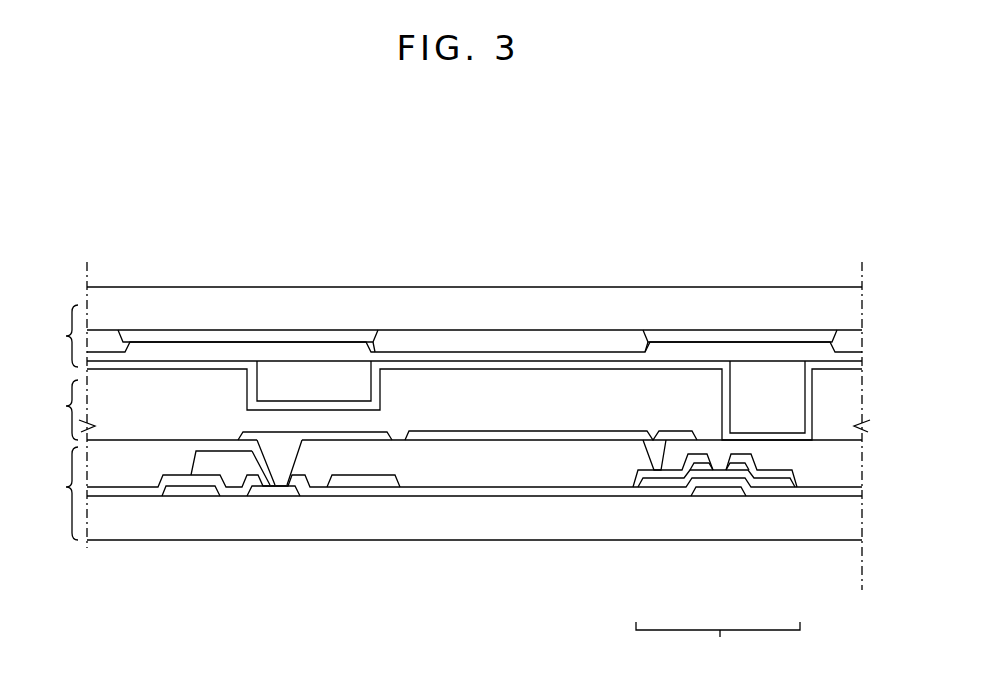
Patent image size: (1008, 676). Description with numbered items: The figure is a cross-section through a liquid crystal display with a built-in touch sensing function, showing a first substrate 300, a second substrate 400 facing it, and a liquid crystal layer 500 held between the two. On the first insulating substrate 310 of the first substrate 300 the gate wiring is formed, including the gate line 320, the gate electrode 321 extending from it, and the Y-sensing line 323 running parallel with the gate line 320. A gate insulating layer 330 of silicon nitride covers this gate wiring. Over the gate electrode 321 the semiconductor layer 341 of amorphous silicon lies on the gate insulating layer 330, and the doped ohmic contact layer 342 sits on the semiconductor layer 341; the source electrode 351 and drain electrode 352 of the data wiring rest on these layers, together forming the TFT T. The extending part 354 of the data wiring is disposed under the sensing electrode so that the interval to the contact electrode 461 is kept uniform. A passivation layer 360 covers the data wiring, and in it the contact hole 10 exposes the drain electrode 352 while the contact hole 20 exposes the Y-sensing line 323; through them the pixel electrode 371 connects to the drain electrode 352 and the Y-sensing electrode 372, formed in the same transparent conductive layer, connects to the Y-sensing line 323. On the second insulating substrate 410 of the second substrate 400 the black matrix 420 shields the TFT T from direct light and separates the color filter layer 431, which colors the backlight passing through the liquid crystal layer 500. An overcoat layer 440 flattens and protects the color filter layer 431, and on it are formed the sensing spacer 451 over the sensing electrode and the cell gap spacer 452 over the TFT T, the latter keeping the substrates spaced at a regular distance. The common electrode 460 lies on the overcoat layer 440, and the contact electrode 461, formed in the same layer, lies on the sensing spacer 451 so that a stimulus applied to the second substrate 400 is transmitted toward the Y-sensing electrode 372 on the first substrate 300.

The contact hole 10 is at (655, 424).
The contact hole 20 is at (276, 446).
The first substrate 300 is at (53, 493).
The first insulating substrate 310 is at (458, 525).
The gate line 320 is at (193, 490).
The gate electrode 321 is at (718, 493).
The Y-sensing line 323 is at (278, 493).
The gate insulating layer 330 is at (848, 490).
The semiconductor layer 341 is at (686, 484).
The ohmic contact layer 342 is at (745, 478).
The source electrode 351 is at (786, 491).
The drain electrode 352 is at (637, 488).
The extending part 354 is at (346, 483).
The passivation layer 360 is at (585, 466).
The pixel electrode 371 is at (517, 435).
The Y-sensing electrode 372 is at (370, 432).
The second substrate 400 is at (53, 336).
The second insulating substrate 410 is at (141, 300).
The black matrix 420 is at (190, 337).
The color filter layer 431 is at (571, 342).
The overcoat layer 440 is at (790, 345).
The sensing spacer 451 is at (290, 380).
The cell gap spacer 452 is at (745, 385).
The common electrode 460 is at (428, 366).
The contact electrode 461 is at (338, 403).
The liquid crystal layer 500 is at (53, 410).
The TFT T is at (718, 638).